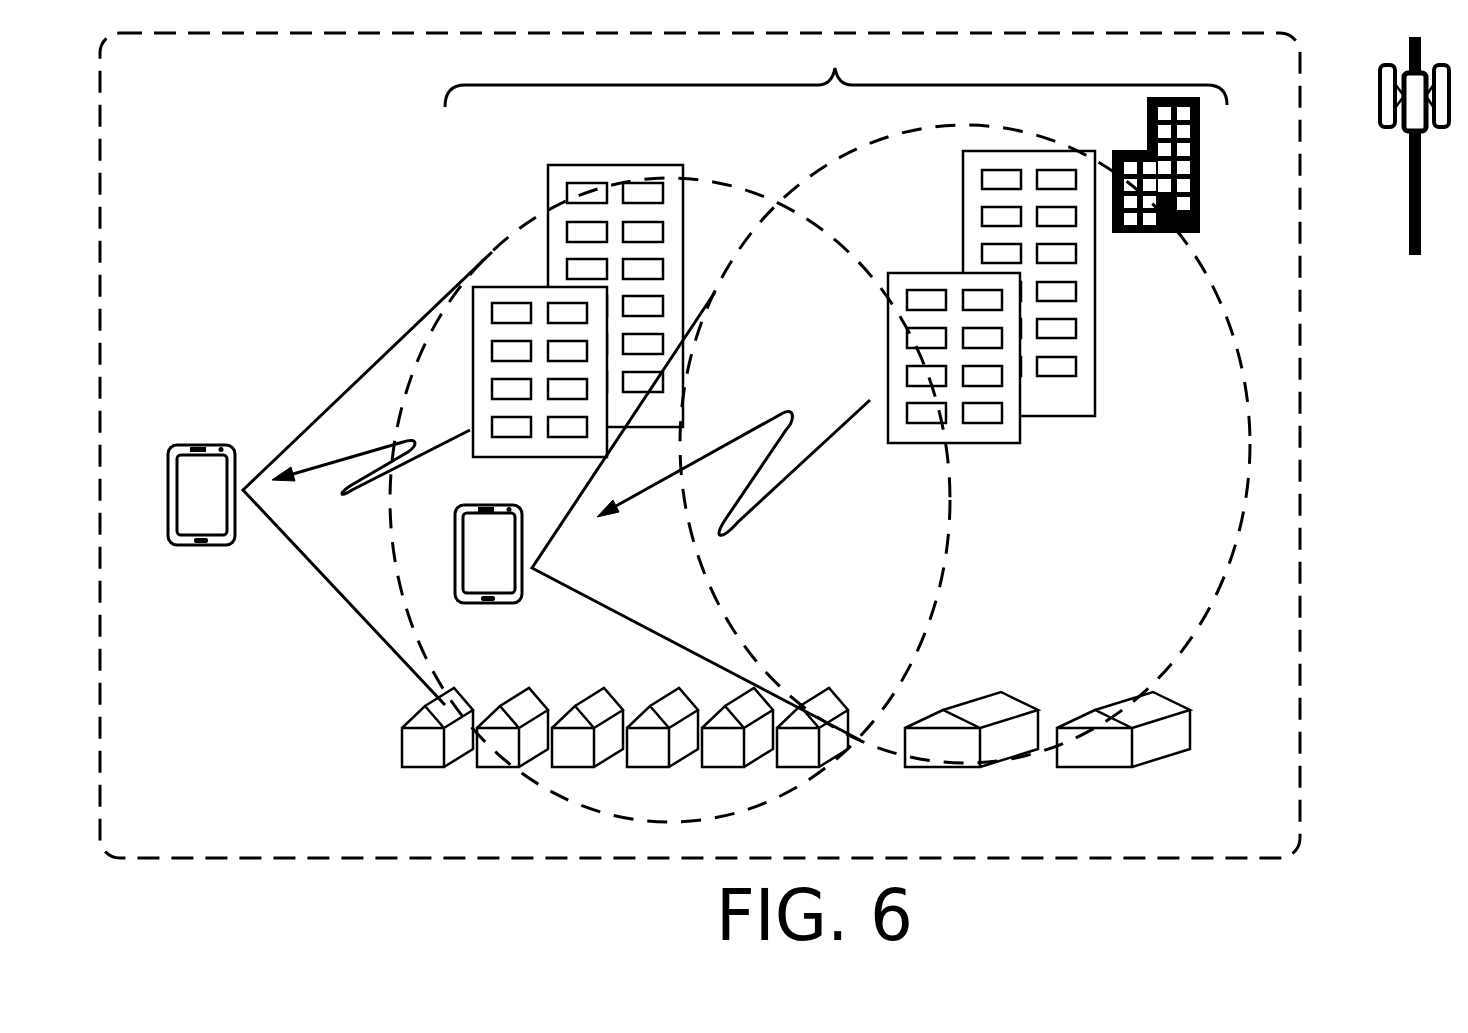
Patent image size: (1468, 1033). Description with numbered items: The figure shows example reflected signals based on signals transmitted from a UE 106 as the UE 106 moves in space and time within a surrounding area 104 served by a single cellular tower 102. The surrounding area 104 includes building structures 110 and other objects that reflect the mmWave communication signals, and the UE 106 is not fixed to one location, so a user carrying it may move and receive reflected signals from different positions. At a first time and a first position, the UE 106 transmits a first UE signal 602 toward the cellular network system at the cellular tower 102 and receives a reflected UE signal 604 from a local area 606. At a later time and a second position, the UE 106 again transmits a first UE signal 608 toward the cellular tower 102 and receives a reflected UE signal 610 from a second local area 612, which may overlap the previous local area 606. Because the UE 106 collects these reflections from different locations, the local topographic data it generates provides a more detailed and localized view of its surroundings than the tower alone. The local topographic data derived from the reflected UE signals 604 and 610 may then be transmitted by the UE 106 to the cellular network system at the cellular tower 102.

The cellular tower 102 is at (1392, 290).
The surrounding area 104 is at (172, 98).
The UE 106 is at (181, 505).
The building structures 110 is at (814, 63).
The first UE signal 602 is at (267, 420).
The reflected UE signal 604 is at (319, 516).
The local area 606 is at (417, 256).
The first UE signal 608 is at (577, 586).
The reflected UE signal 610 is at (797, 510).
The local area 612 is at (821, 140).